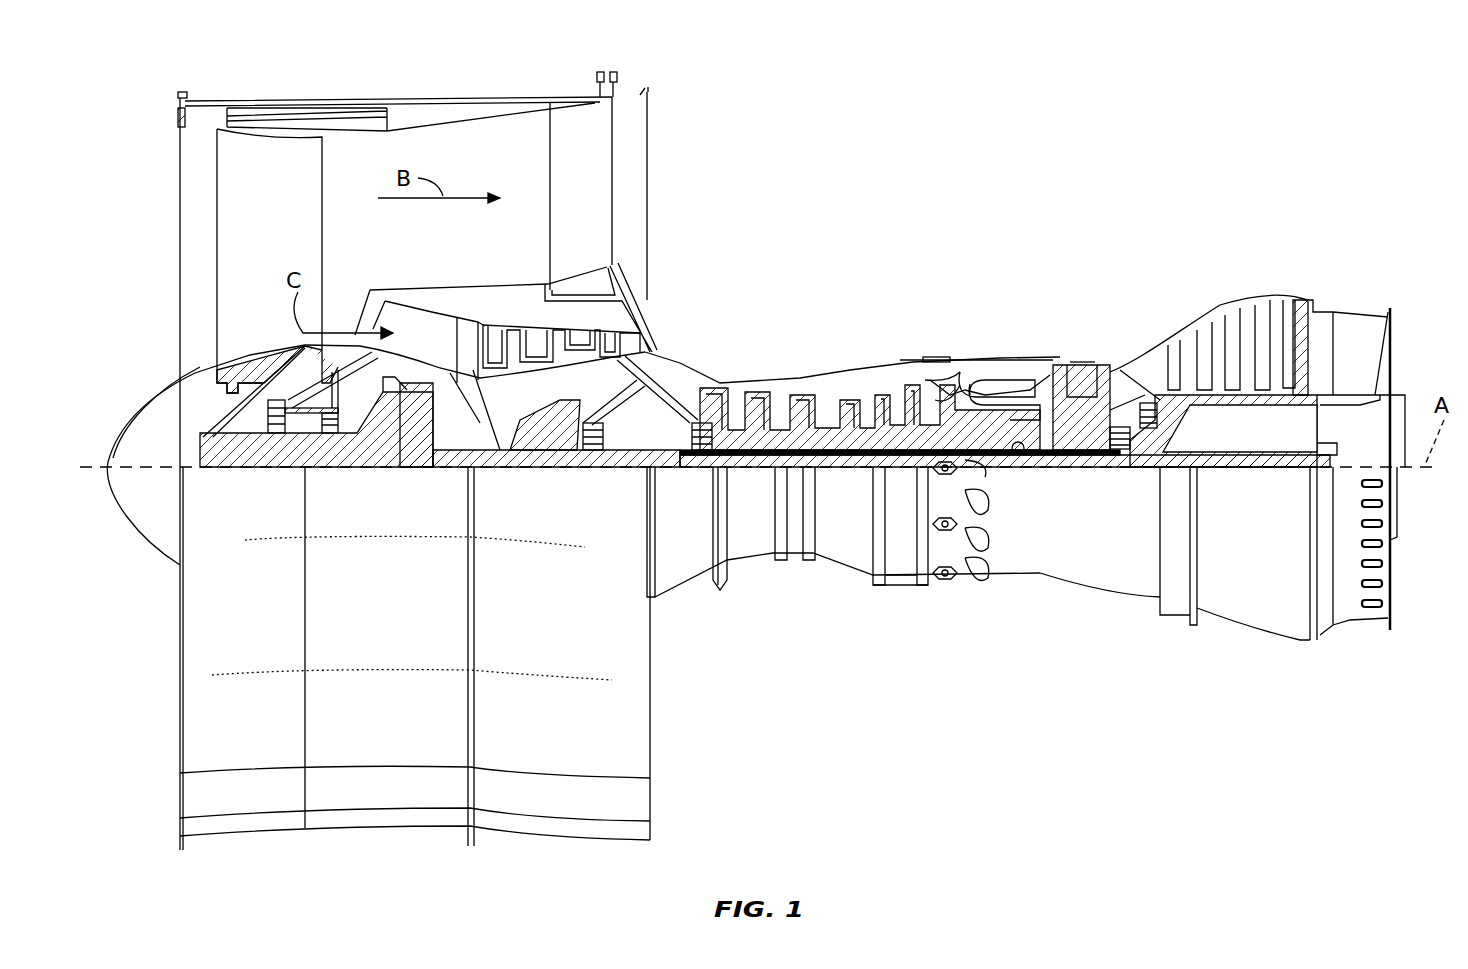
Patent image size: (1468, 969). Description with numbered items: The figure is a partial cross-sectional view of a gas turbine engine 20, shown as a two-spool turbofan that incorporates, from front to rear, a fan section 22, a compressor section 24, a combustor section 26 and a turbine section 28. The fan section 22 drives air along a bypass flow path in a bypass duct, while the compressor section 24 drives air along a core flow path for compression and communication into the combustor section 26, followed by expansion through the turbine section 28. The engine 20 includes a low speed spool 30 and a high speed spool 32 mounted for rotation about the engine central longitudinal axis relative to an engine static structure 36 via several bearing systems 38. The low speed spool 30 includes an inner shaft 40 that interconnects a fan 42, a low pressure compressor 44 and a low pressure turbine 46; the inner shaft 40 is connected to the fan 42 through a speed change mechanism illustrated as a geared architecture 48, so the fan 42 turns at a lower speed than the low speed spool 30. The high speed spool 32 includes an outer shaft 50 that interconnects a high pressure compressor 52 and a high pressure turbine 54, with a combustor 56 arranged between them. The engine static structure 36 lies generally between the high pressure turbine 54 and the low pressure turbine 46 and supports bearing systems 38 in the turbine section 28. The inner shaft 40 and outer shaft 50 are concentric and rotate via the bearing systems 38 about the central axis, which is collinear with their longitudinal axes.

The gas turbine engine 20 is at (1262, 113).
The fan section 22 is at (287, 96).
The compressor section 24 is at (820, 272).
The combustor section 26 is at (1016, 256).
The turbine section 28 is at (1165, 248).
The low speed spool 30 is at (860, 474).
The high speed spool 32 is at (930, 420).
The engine static structure 36 is at (908, 586).
The bearing systems 38 is at (280, 425).
The inner shaft 40 is at (664, 468).
The fan 42 is at (279, 244).
The low pressure compressor 44 is at (560, 333).
The low pressure turbine 46 is at (1247, 322).
The geared architecture 48 is at (425, 445).
The outer shaft 50 is at (1020, 455).
The high pressure compressor 52 is at (803, 420).
The high pressure turbine 54 is at (1080, 362).
The combustor 56 is at (1000, 386).